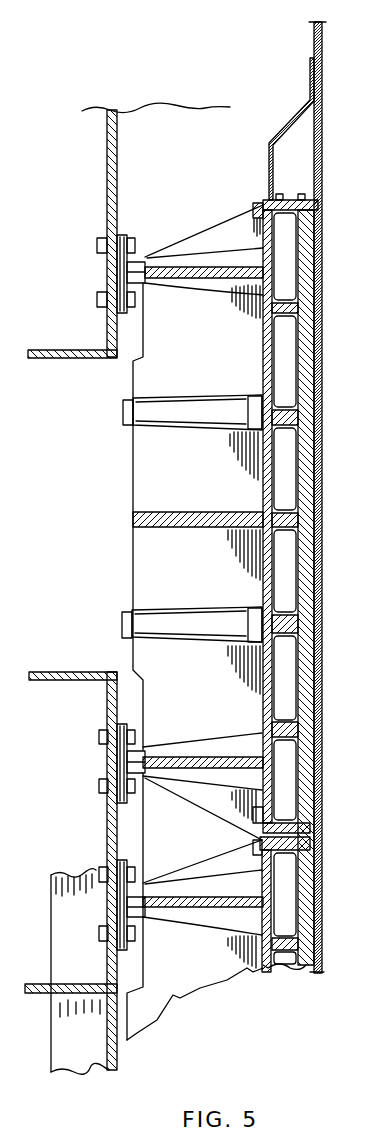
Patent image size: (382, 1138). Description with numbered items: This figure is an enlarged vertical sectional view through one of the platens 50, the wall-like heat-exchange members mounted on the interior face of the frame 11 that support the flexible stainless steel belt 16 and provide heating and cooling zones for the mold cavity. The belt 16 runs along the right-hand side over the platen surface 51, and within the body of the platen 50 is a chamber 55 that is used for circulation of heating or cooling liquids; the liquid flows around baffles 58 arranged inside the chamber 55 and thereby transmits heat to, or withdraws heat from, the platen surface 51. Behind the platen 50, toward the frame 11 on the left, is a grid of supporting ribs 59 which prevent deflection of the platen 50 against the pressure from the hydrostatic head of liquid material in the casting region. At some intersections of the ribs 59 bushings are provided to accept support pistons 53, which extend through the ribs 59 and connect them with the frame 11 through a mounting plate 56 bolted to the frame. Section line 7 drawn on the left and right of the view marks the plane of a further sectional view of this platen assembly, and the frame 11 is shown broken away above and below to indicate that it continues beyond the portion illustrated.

The frame 11 is at (107, 143).
The belt 16 is at (322, 107).
The platen 50 is at (260, 972).
The platen surface 51 is at (320, 247).
The support piston 53 is at (140, 262).
The chamber 55 is at (287, 352).
The mounting plate 56 is at (122, 235).
The baffles 58 is at (285, 634).
The supporting ribs 59 is at (153, 512).
The section line 7- 7 is at (50, 760).